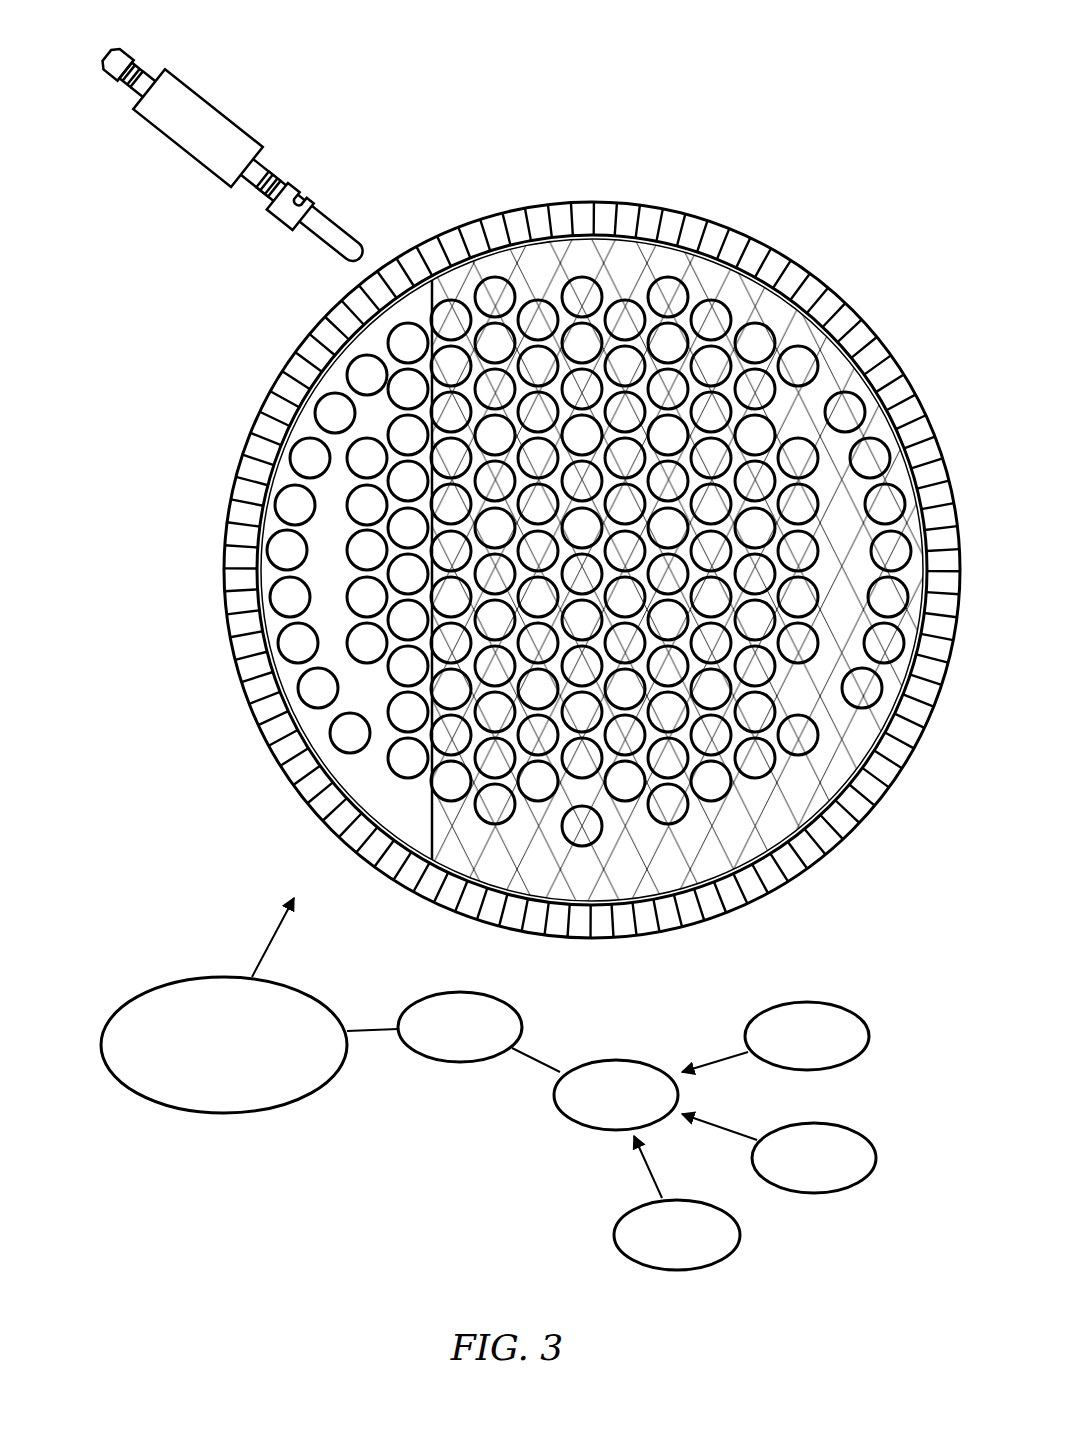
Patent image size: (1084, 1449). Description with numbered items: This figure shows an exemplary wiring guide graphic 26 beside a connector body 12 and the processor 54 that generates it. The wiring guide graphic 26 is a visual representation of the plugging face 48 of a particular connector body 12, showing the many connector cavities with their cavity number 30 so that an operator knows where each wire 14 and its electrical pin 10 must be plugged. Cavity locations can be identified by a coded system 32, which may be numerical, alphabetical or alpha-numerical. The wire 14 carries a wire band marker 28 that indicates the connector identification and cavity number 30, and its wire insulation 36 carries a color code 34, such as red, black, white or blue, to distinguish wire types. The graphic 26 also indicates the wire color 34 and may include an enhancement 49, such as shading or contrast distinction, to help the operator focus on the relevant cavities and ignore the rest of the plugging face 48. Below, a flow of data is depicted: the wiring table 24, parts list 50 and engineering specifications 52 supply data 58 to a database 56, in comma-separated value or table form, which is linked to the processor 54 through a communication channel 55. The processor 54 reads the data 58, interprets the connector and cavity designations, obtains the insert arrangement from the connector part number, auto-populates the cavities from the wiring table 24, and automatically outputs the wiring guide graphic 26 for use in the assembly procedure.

The electrical pin 10 is at (227, 162).
The connector body 12 is at (760, 262).
The wire 14 is at (142, 48).
The wiring table 24 is at (662, 1247).
The wiring guide graphic 26 is at (513, 516).
The wire band marker 28 is at (222, 105).
The cavity number 30 is at (270, 472).
The coded system 32 is at (180, 622).
The color code 34 is at (100, 78).
The wire insulation 36 is at (276, 170).
The plugging face 48 is at (200, 497).
The enhancement 49 is at (777, 815).
The parts list 50 is at (800, 1170).
The engineering specifications 52 is at (793, 1048).
The processor 54 is at (215, 1056).
The communication channel 55 is at (363, 1028).
The database 56 is at (446, 1039).
The data 58 is at (601, 1107).